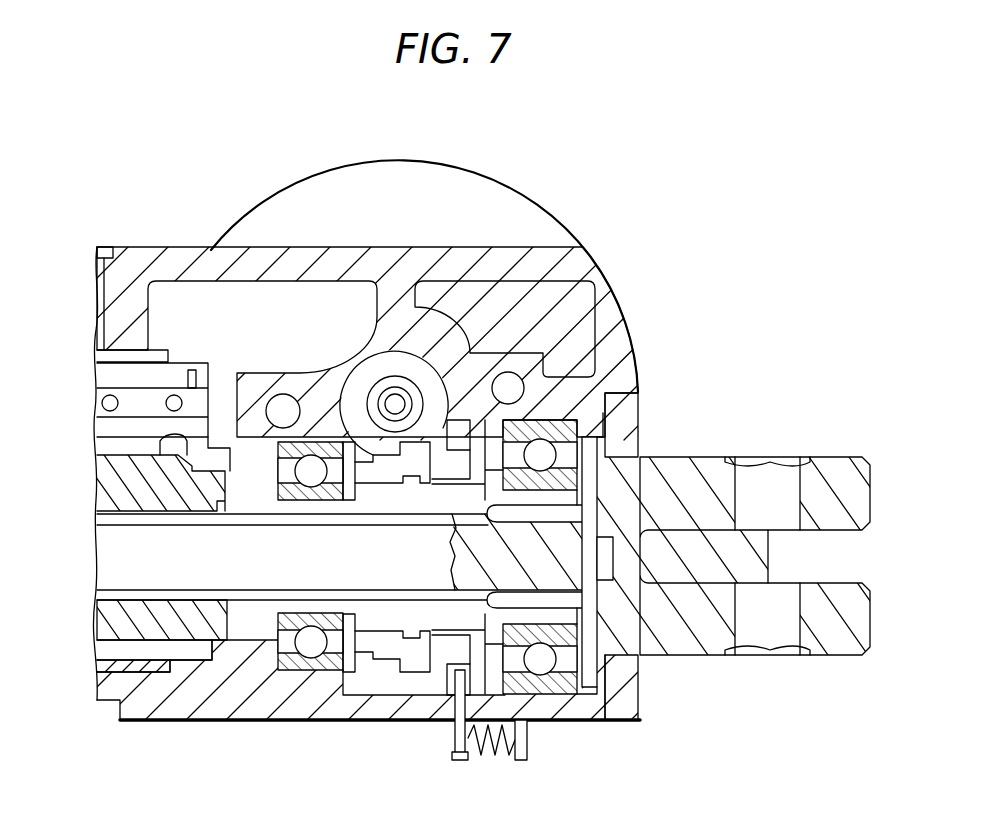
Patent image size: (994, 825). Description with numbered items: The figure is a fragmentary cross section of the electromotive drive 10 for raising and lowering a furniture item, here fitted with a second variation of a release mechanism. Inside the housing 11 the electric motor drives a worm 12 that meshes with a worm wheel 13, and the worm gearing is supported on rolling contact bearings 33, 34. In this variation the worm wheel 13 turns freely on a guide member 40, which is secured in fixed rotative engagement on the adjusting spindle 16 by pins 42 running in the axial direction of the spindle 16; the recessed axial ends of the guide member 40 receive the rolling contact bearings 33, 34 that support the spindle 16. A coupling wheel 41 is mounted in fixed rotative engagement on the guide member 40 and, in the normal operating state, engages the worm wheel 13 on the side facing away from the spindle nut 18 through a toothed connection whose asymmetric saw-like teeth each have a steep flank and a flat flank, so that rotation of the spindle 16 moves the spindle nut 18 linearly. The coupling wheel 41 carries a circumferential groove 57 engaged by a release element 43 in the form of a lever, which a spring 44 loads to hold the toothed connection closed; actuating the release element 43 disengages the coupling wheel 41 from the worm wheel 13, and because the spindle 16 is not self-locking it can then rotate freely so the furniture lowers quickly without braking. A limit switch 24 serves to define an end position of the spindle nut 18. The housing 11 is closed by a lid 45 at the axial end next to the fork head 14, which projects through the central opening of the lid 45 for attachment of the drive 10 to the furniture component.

The electromotive drive 10 is at (491, 178).
The housing 11 is at (610, 308).
The worm 12 is at (396, 390).
The worm wheel 13 is at (400, 655).
The fork head 14 is at (686, 466).
The adjusting spindle 16 is at (99, 550).
The spindle nut 18 is at (99, 617).
The limit switch 24 is at (99, 434).
The rolling contact bearing 33 is at (622, 388).
The rolling contact bearing 34 is at (298, 672).
The guide member 40 is at (370, 612).
The coupling wheel 41 is at (446, 655).
The pins 42 is at (588, 603).
The release element 43 is at (459, 757).
The spring 44 is at (490, 758).
The lid 45 is at (622, 716).
The circumferential groove 57 is at (458, 427).